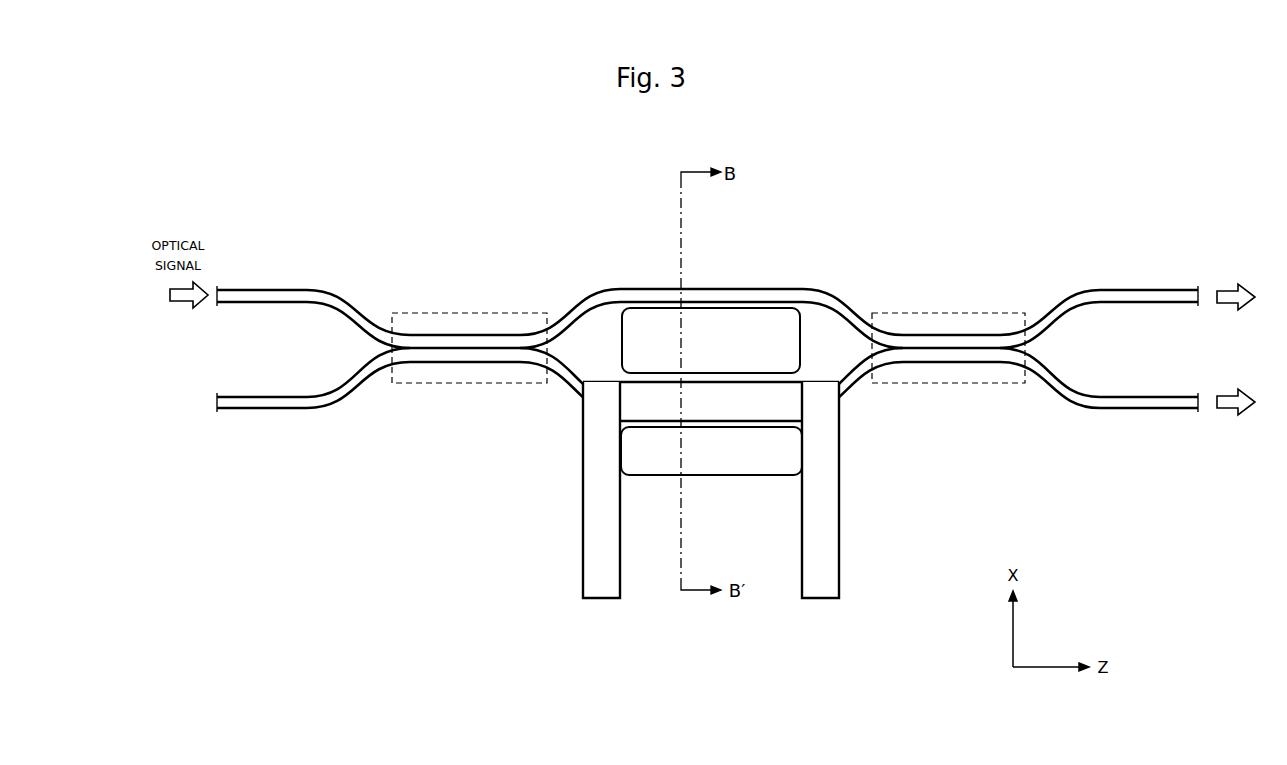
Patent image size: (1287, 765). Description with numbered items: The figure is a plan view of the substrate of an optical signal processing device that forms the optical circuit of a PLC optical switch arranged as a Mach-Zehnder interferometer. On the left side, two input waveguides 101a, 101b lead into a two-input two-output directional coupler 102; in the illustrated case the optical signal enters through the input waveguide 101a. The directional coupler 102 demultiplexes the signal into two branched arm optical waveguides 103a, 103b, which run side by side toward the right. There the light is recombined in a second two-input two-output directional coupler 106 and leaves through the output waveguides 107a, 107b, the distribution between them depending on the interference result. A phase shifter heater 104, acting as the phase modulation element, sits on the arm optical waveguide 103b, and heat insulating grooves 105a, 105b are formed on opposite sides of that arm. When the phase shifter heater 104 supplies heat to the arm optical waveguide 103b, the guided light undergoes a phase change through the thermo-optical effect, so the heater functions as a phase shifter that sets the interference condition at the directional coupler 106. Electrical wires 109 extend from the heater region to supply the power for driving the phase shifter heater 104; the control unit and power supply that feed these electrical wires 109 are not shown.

The input waveguide 101a is at (280, 289).
The input waveguide 101b is at (287, 409).
The two-input two-output directional coupler 102 is at (461, 312).
The arm optical waveguide 103a is at (719, 288).
The arm optical waveguide 103b is at (855, 389).
The phase shifter heater 104 is at (630, 388).
The heat insulating groove 105a is at (711, 340).
The heat insulating groove 105b is at (711, 451).
The two-input two-output directional coupler 106 is at (938, 312).
The output waveguide 107a is at (1129, 289).
The output waveguide 107b is at (1137, 409).
The electrical wires 109 is at (602, 600).